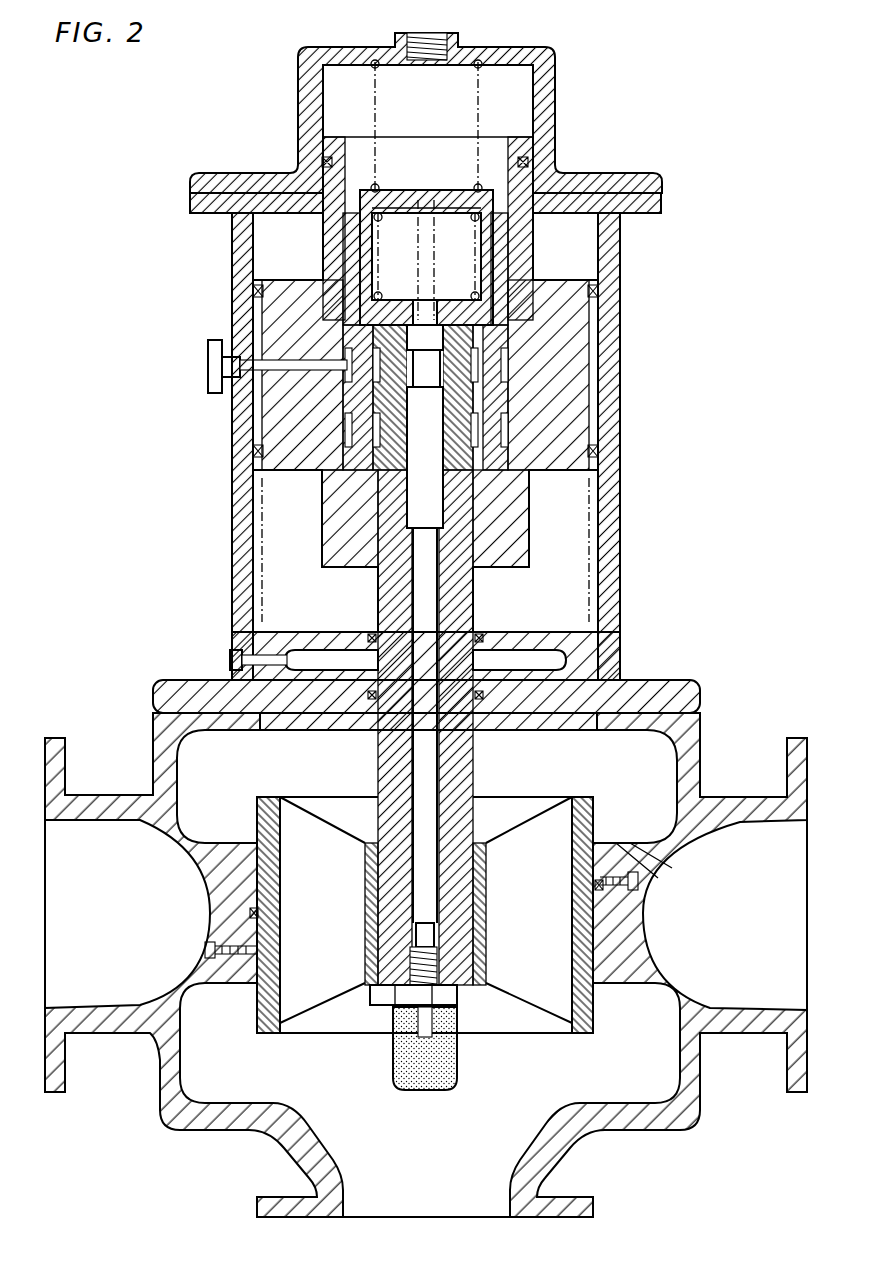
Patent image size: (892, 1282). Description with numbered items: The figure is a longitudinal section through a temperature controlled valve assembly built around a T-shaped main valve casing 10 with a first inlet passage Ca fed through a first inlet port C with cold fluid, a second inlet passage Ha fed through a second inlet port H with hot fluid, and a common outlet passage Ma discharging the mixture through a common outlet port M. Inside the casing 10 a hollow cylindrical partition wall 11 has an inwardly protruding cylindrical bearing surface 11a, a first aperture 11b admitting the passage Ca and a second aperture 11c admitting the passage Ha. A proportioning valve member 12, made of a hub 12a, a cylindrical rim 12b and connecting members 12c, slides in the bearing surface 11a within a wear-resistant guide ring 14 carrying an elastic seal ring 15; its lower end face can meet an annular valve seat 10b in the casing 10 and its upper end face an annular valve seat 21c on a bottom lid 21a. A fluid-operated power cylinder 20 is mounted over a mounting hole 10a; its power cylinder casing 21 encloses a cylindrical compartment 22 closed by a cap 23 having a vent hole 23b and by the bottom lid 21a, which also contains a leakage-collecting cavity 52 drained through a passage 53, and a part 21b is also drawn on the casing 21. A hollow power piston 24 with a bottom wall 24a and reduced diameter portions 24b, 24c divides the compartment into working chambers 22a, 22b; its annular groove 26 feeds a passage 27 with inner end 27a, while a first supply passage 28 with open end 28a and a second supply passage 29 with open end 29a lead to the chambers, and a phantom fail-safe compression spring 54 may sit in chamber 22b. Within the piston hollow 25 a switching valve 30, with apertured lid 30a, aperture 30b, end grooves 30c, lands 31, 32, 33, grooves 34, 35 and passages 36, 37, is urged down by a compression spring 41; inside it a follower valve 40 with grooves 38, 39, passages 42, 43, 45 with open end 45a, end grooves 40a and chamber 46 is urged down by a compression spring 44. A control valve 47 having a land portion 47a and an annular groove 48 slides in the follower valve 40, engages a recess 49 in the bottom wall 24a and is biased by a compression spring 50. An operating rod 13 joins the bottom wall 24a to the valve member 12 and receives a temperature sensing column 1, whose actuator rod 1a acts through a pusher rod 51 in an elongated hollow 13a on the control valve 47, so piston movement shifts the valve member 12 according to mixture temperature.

The main valve casing 10 is at (715, 732).
The mounting hole 10a is at (542, 787).
The annular valve seat 10b is at (585, 1097).
The partition wall 11 is at (690, 848).
The cylindrical bearing surface 11a is at (613, 930).
The first aperture 11b is at (677, 997).
The second aperture 11c is at (160, 828).
The proportioning valve member 12 is at (320, 1012).
The hub 12a is at (533, 935).
The cylindrical rim 12b is at (257, 1000).
The connecting members 12c is at (527, 993).
The operating rod 13 is at (372, 692).
The elongated hollow 13a is at (440, 772).
The guide ring 14 is at (672, 962).
The elastic seal ring 15 is at (320, 950).
The temperature sensing column 1 is at (410, 1093).
The actuator rod 1a is at (445, 937).
The fluid-operated power cylinder 20 is at (640, 300).
The power cylinder casing 21 is at (240, 615).
The bottom lid 21a is at (497, 630).
The guide pin 21b is at (208, 362).
The annular valve seat 21c is at (165, 865).
The cylindrical compartment 22 is at (240, 585).
The working chamber 22a is at (250, 600).
The working chamber 22b is at (258, 222).
The cap 23 is at (335, 75).
The vent hole 23b is at (448, 36).
The power piston 24 is at (345, 405).
The bottom wall 24a is at (372, 552).
The reduced diameter portion 24b is at (333, 150).
The reduced diameter portion 24c is at (285, 560).
The cylindrical hollow 25 is at (350, 170).
The annular groove 26 is at (330, 398).
The passage 27 is at (290, 378).
The radially inner end 27a is at (300, 388).
The first supply passage 28 is at (590, 442).
The open end 28a is at (600, 282).
The second supply passage 29 is at (600, 248).
The open end 29a is at (590, 372).
The switching valve 30 is at (365, 230).
The apertured lid 30a is at (425, 193).
The aperture 30b is at (400, 190).
The radially extending grooves 30c is at (350, 472).
The land 31 is at (482, 482).
The land 32 is at (590, 397).
The land 33 is at (585, 322).
The annular groove 34 is at (350, 437).
The annular groove 35 is at (355, 375).
The passage 36 is at (360, 452).
The passage 37 is at (372, 362).
The annular groove 38 is at (590, 422).
The annular groove 39 is at (590, 347).
The follower valve 40 is at (345, 487).
The radially extending grooves 40a is at (470, 487).
The compression spring 41 is at (372, 108).
The passage 42 is at (410, 340).
The passage 43 is at (350, 295).
The compression spring 44 is at (500, 205).
The passage 45 is at (560, 458).
The open end 45a is at (505, 290).
The working chamber 46 is at (475, 502).
The control valve 47 is at (322, 565).
The land portion 47a is at (498, 262).
The annular groove 48 is at (410, 340).
The recess 49 is at (448, 537).
The compression spring 50 is at (448, 215).
The pusher rod 51 is at (440, 722).
The cavity 52 is at (560, 652).
The passage 53 is at (232, 660).
The fail-safe compression spring 54 is at (592, 567).
The valve seat S is at (393, 1068).
The second inlet port H is at (48, 960).
The second inlet passage Ha is at (138, 936).
The first inlet port C is at (800, 930).
The first inlet passage Ca is at (752, 936).
The common outlet port M is at (432, 1213).
The common outlet passage Ma is at (440, 1156).